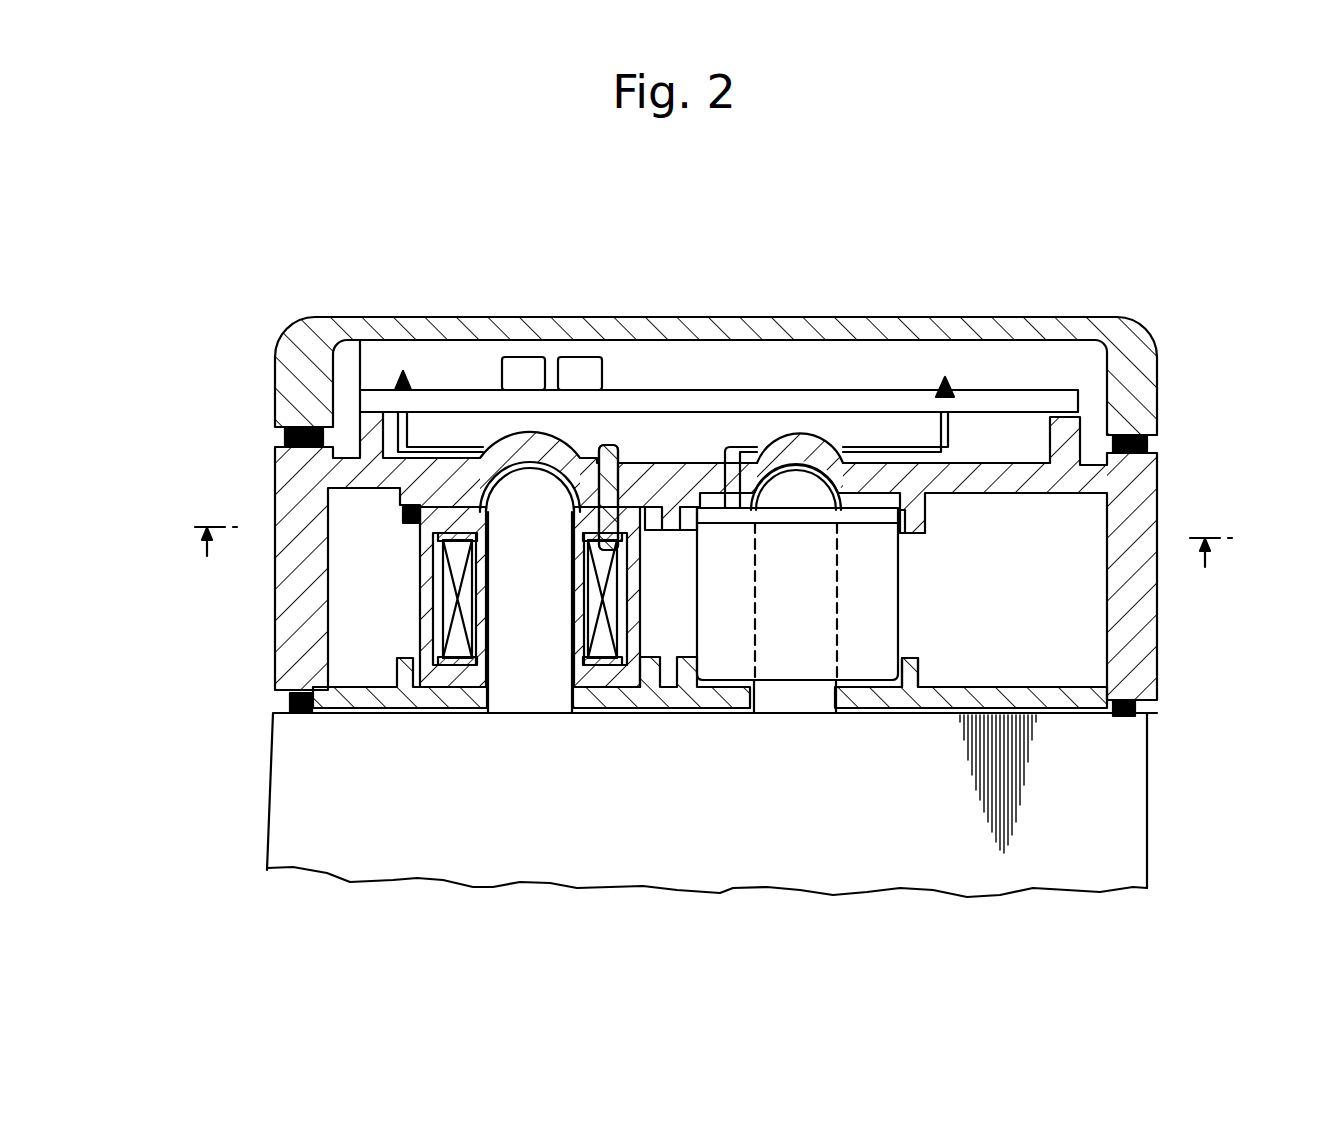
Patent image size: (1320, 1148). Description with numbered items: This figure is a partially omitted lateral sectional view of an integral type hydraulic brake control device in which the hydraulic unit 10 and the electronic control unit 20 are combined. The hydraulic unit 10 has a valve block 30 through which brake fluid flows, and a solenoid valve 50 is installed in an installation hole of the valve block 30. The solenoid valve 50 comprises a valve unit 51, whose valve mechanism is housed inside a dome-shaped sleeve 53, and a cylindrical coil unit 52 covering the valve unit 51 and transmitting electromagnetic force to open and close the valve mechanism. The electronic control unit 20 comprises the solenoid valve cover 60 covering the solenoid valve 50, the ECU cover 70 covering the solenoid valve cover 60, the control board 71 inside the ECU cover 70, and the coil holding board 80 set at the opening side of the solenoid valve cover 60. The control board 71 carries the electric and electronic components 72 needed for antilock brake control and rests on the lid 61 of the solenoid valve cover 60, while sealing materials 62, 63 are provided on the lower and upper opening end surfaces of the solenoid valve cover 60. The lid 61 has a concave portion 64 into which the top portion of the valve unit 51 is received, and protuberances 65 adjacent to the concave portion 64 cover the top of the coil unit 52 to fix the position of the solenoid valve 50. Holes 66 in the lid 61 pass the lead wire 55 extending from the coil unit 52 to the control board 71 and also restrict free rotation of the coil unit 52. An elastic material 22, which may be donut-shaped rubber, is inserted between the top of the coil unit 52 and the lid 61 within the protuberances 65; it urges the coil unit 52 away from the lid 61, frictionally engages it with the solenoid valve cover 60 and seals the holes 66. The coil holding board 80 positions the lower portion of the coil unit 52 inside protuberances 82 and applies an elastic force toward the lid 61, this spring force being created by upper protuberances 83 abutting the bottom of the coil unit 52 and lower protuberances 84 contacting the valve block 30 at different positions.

The hydraulic unit 10 is at (1158, 800).
The electronic control unit 20 is at (723, 499).
The elastic material 22 is at (781, 520).
The valve block 30 is at (783, 882).
The solenoid valve 50 is at (855, 594).
The valve unit 51 is at (837, 587).
The coil unit 52 is at (900, 618).
The dome-shaped sleeve 53 is at (505, 590).
The lead wire 55 is at (448, 440).
The solenoid valve cover 60 is at (1152, 487).
The lid 61 is at (1050, 493).
The sealing material 62 is at (290, 700).
The sealing material 63 is at (290, 437).
The concave portion 64 is at (785, 503).
The protuberance 65 is at (682, 533).
The hole 66 is at (618, 460).
The ECU cover 70 is at (828, 318).
The control board 71 is at (688, 397).
The electric and electronic components 72 is at (586, 362).
The coil holding board 80 is at (710, 702).
The protuberance 82 is at (920, 665).
The upper protuberance 83 is at (858, 716).
The lower protuberance 84 is at (703, 716).